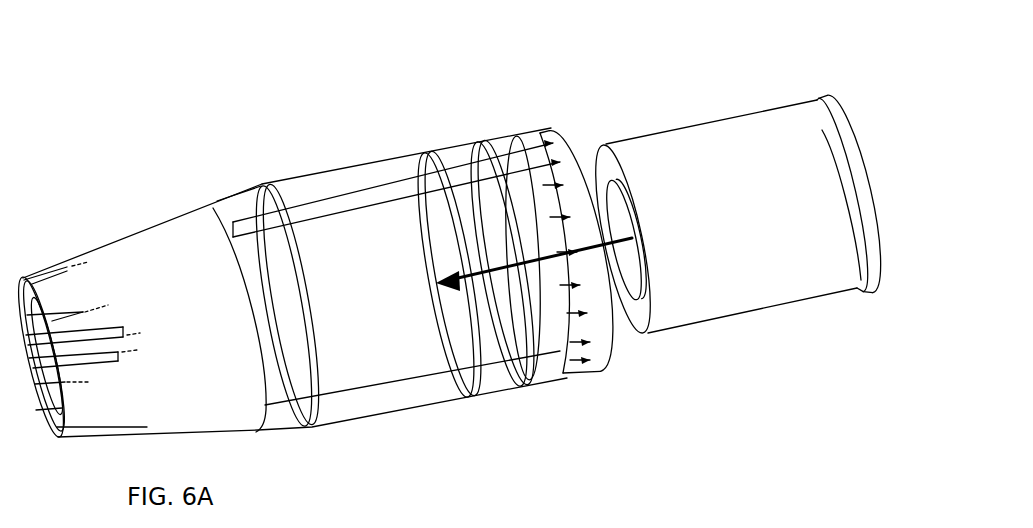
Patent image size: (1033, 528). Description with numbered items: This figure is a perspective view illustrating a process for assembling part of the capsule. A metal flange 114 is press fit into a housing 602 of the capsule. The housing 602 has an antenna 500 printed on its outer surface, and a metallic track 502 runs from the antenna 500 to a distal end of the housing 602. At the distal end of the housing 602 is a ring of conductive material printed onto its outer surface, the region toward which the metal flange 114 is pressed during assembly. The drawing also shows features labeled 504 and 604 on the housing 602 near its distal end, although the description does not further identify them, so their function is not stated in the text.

The antenna 500 is at (138, 257).
The metallic track 502 is at (297, 210).
The housing 602 is at (338, 166).
The annular flanges 604 is at (540, 263).
The toothed end collar 504 is at (557, 140).
The metal flange 114 is at (746, 287).